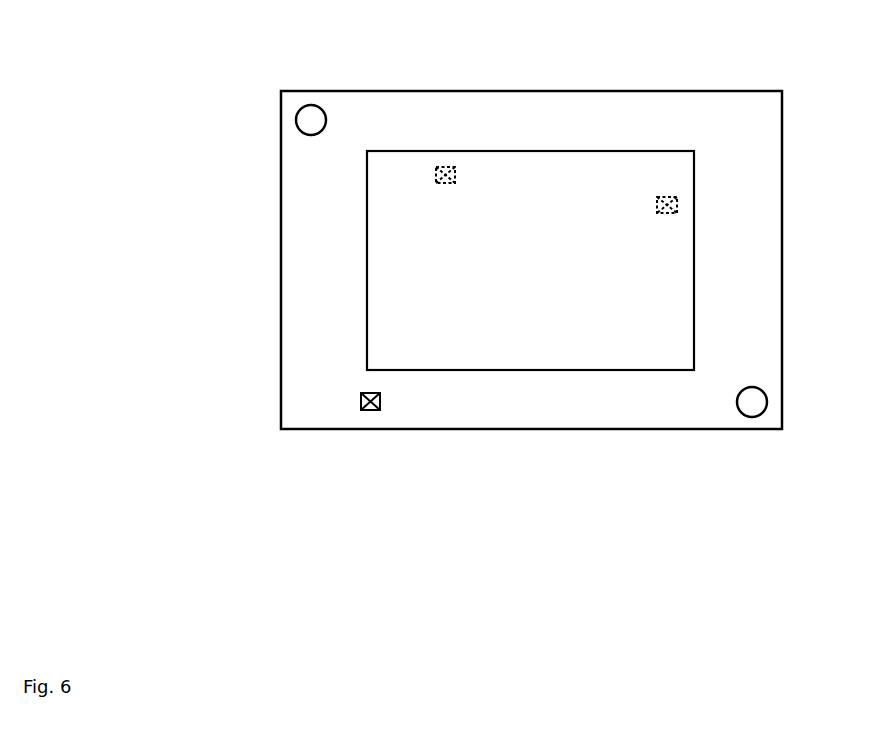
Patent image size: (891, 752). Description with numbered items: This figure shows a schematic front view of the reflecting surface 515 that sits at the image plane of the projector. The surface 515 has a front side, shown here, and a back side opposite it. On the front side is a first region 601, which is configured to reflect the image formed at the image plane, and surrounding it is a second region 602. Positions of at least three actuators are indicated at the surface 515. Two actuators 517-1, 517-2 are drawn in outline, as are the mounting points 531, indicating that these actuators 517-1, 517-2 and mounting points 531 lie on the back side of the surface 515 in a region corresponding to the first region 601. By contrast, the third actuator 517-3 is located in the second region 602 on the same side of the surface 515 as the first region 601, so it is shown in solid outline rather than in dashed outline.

The surface 515 is at (280, 418).
The mounting points 531 is at (296, 121).
The actuator 517-1 is at (447, 165).
The actuator 517-2 is at (678, 205).
The actuator 517-3 is at (368, 412).
The first region 601 is at (546, 274).
The second region 602 is at (571, 410).